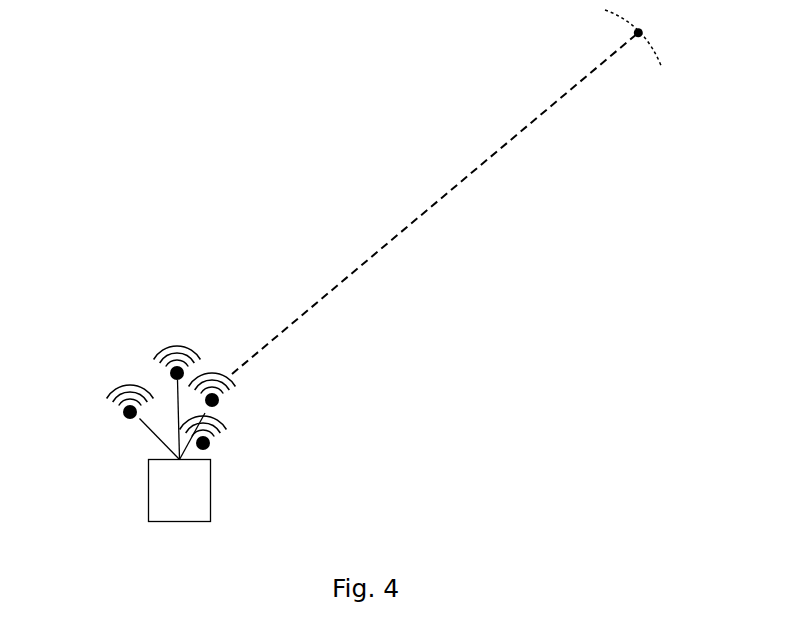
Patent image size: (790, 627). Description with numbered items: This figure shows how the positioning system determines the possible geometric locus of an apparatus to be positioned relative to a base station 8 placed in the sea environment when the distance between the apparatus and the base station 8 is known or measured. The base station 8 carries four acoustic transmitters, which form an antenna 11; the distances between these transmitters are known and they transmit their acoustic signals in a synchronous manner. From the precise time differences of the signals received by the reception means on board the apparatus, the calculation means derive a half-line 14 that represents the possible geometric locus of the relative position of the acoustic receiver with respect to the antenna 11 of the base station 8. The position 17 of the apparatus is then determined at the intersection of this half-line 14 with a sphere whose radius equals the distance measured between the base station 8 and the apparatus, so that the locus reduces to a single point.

The base station 8 is at (148, 513).
The antenna 11 is at (92, 374).
The half-line 14 is at (426, 216).
The position 17 is at (644, 26).